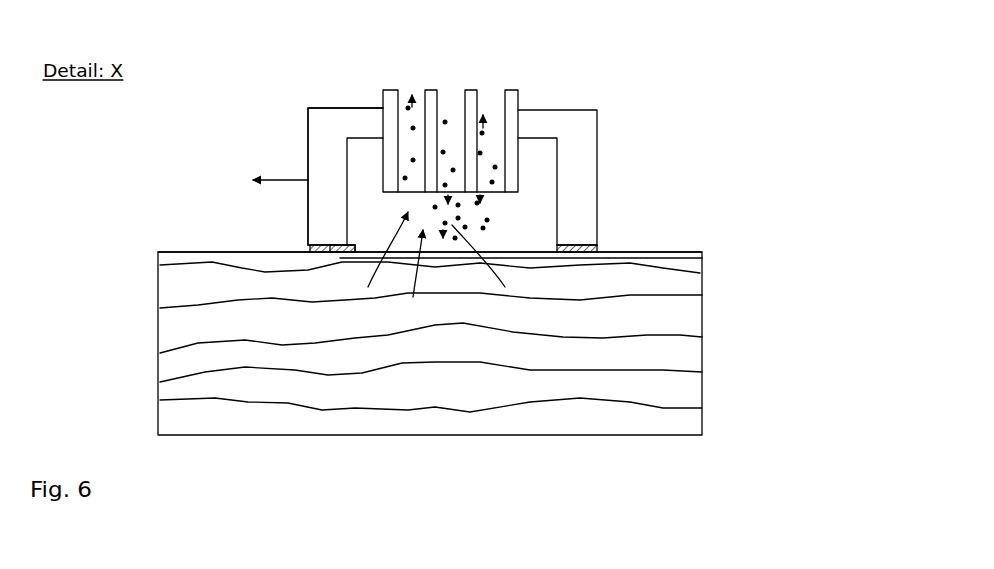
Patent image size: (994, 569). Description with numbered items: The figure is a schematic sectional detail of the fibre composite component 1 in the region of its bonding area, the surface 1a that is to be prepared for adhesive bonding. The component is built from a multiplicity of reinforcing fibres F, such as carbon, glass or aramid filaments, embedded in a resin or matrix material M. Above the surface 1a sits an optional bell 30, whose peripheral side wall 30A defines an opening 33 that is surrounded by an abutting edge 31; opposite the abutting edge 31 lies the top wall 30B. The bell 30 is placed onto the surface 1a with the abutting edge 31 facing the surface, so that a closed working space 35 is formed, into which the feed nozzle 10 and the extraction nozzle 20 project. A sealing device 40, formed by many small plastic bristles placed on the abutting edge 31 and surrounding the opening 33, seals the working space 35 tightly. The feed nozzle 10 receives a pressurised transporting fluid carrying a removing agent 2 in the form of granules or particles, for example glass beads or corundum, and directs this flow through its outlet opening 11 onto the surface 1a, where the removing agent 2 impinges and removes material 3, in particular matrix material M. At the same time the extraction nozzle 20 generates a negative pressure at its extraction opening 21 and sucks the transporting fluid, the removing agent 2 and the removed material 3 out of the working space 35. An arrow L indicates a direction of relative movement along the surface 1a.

The fibre composite component 1 is at (706, 320).
The surface 1a is at (220, 243).
The removing agent 2 is at (439, 256).
The removed material 3 is at (409, 281).
The feed nozzle 10 is at (450, 102).
The outlet opening 11 is at (465, 200).
The extraction nozzle 20 is at (492, 102).
The extraction opening 21 is at (387, 198).
The bell 30 is at (593, 122).
The peripheral side wall 30A is at (592, 168).
The top wall 30B is at (372, 114).
The abutting edge 31 is at (325, 254).
The opening 33 is at (352, 253).
The working space 35 is at (378, 230).
The sealing device 40 is at (580, 254).
The reinforcing fibres F is at (696, 276).
The matrix material M is at (692, 353).
The feed direction L is at (428, 453).